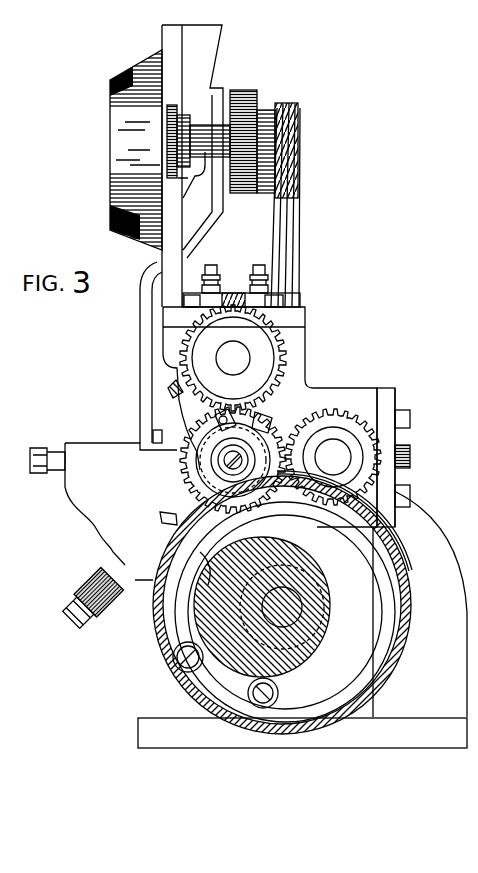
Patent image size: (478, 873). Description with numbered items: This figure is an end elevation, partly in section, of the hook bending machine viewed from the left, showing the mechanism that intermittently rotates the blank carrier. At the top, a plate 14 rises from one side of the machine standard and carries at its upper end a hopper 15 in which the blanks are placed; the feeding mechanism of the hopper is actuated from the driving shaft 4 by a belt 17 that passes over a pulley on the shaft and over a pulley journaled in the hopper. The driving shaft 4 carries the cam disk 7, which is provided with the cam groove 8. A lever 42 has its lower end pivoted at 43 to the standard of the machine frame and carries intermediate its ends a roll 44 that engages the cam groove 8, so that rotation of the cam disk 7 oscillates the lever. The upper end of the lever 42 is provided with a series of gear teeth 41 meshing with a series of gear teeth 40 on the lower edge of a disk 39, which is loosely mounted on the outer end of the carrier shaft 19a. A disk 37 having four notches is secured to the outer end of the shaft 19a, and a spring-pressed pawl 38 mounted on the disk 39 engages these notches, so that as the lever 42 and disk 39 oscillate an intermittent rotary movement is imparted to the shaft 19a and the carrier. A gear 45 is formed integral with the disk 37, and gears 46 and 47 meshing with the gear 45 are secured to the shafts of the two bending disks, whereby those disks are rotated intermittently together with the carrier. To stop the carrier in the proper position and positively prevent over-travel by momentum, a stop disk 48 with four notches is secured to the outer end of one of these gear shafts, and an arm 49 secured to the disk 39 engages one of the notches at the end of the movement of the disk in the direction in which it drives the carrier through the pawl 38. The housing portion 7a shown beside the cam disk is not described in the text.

The hopper 15 is at (110, 80).
The plate 14 is at (142, 283).
The belt 17 is at (300, 222).
The stop disk 48 is at (253, 333).
The gear 46 is at (283, 348).
The arm 49 is at (188, 400).
The spring-pressed pawl 38 is at (235, 408).
The disk 39 is at (263, 420).
The gear 45 is at (273, 427).
The disk 37 is at (180, 498).
The gear teeth 40 is at (180, 482).
The shaft 19a is at (223, 460).
The gear teeth 41 is at (167, 518).
The gear 47 is at (340, 420).
The cam disk 7 is at (393, 680).
The drum housing 7a is at (462, 571).
The cam groove 8 is at (393, 577).
The lever 42 is at (190, 592).
The driving shaft 4 is at (282, 588).
The roll 44 is at (178, 664).
The pivot 43 is at (278, 692).